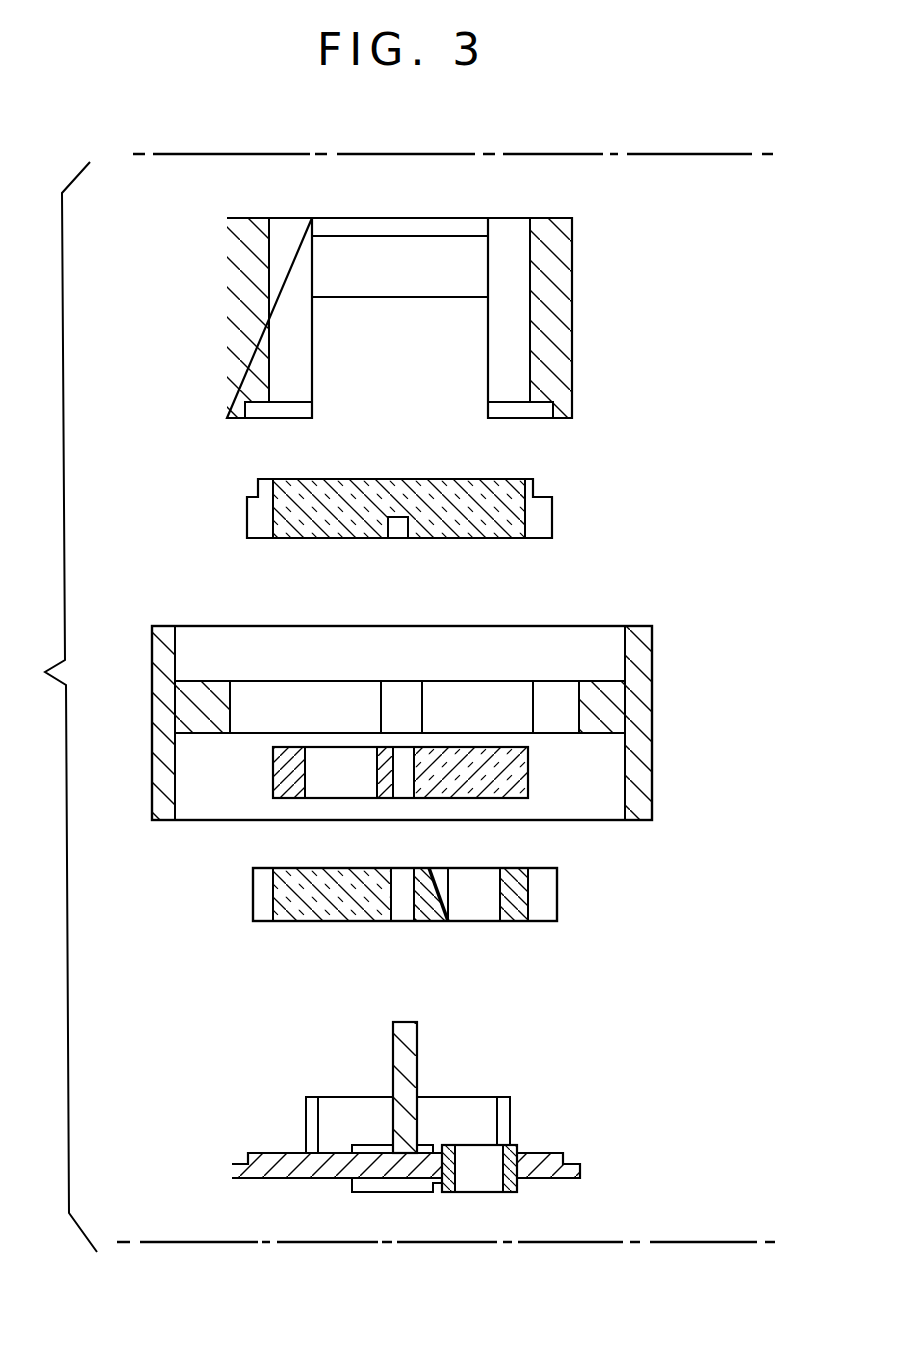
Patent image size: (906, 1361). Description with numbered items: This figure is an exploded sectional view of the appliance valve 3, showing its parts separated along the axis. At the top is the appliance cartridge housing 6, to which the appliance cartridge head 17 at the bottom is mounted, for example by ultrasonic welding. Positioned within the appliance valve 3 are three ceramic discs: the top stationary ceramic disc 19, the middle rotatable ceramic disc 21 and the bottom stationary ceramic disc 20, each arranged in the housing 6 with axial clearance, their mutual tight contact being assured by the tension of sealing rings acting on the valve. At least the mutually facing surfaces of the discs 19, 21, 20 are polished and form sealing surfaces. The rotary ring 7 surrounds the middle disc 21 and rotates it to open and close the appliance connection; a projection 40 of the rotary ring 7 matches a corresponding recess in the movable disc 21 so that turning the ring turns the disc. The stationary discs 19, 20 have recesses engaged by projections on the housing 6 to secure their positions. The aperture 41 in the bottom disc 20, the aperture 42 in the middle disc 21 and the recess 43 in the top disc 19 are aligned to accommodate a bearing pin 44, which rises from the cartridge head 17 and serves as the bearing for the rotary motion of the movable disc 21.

The appliance valve 3 is at (59, 707).
The appliance cartridge housing 6 is at (228, 332).
The rotary ring 7 is at (424, 721).
The appliance cartridge head 17 is at (406, 1103).
The top stationary ceramic disc 19 is at (399, 536).
The bottom stationary ceramic disc 20 is at (343, 921).
The middle rotatable ceramic disc 21 is at (273, 772).
The projection 40 is at (397, 703).
The aperture 41 is at (405, 908).
The aperture 42 is at (405, 787).
The recess 43 is at (399, 525).
The bearing pin 44 is at (405, 1040).